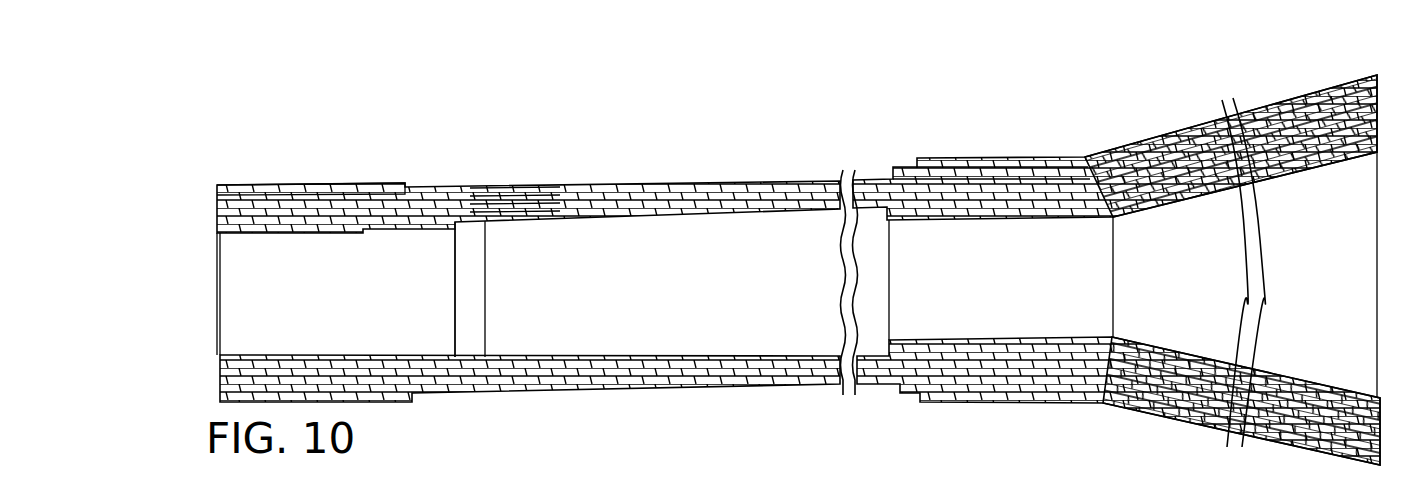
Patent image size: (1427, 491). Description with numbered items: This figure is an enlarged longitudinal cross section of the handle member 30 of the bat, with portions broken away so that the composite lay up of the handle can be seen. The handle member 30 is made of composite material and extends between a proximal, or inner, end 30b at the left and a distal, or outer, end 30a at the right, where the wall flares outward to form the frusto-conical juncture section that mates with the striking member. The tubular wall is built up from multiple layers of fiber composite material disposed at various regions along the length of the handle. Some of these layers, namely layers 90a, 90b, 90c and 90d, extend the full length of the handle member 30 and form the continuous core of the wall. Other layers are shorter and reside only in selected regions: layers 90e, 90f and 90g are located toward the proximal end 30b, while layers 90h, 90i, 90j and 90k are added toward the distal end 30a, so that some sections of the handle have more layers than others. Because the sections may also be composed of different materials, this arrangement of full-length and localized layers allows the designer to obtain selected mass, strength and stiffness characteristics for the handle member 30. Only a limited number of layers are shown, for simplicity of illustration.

The handle member 30 is at (688, 183).
The distal end 30a is at (1376, 118).
The proximal end 30b is at (214, 200).
The composite material layer 90a is at (477, 188).
The composite material layer 90b is at (493, 188).
The composite material layer 90c is at (510, 188).
The composite material layer 90d is at (528, 188).
The composite material layer 90e is at (370, 233).
The composite material layer 90f is at (470, 222).
The composite material layer 90g is at (370, 183).
The composite material layer 90h is at (960, 222).
The composite material layer 90i is at (893, 178).
The composite material layer 90j is at (895, 168).
The composite material layer 90k is at (992, 157).